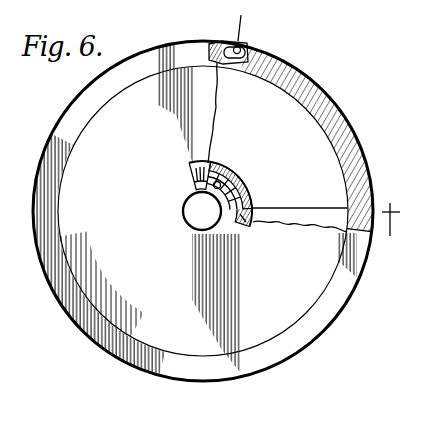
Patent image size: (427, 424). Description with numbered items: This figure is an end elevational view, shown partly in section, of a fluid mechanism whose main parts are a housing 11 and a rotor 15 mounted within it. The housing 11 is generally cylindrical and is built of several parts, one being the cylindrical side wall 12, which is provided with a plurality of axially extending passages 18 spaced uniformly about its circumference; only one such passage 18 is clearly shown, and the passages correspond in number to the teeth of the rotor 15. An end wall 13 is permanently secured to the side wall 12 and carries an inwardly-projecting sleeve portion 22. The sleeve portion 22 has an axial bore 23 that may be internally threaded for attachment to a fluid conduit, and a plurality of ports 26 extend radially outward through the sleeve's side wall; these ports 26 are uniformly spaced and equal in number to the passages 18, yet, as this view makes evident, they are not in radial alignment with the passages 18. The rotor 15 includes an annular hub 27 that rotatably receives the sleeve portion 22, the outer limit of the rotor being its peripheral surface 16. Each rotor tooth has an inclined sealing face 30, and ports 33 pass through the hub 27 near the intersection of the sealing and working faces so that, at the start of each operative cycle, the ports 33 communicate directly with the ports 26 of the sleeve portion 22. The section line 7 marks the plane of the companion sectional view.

The section line 7— 7 is at (233, 21).
The housing 11 is at (340, 295).
The cylindrical side wall 12 is at (343, 125).
The end wall 13 is at (287, 303).
The rotor 15 is at (333, 177).
The peripheral surface of the rotor 16 is at (298, 79).
The axially extending passage 18 is at (249, 51).
The sleeve portion 22 is at (224, 228).
The axial bore 23 is at (183, 211).
The ports 26 is at (230, 180).
The annular hub 27 is at (246, 193).
The sealing face 30 is at (268, 113).
The ports 33 is at (206, 162).